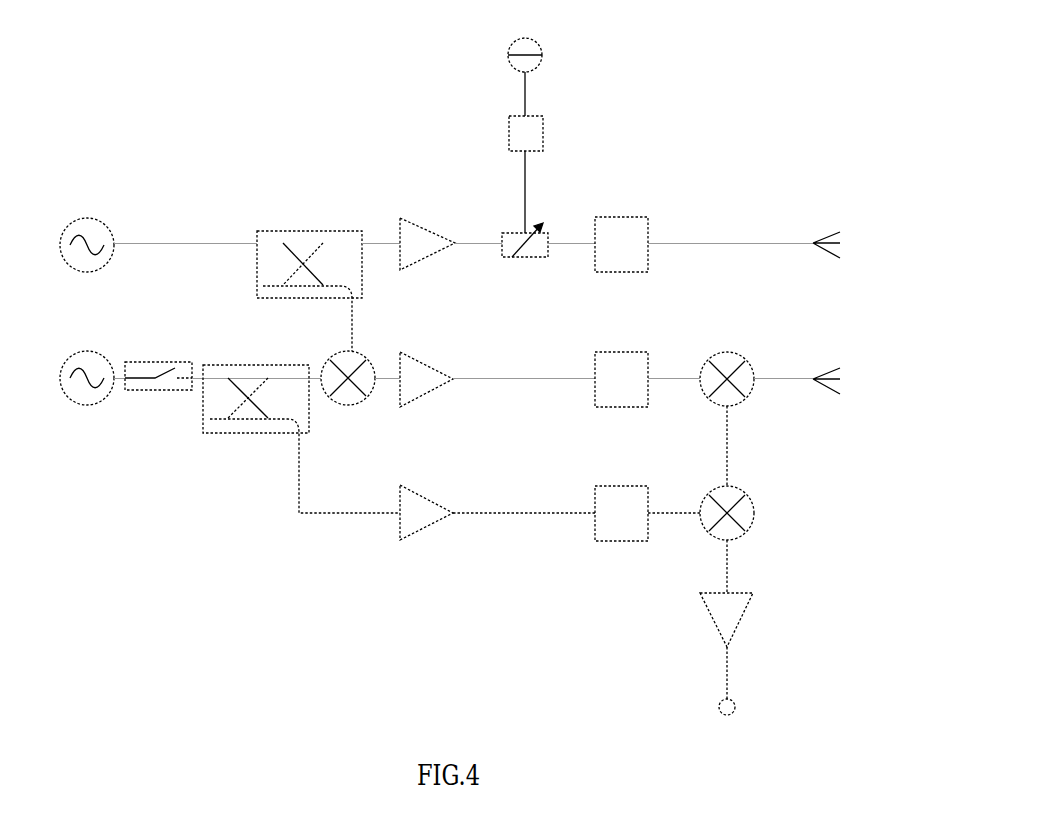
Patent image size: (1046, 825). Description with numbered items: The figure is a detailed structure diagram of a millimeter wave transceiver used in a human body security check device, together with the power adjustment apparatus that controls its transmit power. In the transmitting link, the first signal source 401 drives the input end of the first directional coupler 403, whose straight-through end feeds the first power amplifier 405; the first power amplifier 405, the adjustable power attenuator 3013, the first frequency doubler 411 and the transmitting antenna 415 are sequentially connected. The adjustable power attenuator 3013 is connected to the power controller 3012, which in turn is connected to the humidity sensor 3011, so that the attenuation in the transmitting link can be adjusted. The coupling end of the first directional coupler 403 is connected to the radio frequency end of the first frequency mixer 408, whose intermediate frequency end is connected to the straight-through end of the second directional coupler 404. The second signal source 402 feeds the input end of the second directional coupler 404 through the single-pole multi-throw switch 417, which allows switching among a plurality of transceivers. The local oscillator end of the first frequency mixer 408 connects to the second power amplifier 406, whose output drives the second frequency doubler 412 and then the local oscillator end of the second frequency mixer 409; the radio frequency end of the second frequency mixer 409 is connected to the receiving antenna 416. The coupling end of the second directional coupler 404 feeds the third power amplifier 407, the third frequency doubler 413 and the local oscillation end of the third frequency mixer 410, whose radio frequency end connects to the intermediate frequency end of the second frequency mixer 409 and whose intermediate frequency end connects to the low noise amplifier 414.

The first signal source 401 is at (87, 217).
The second signal source 402 is at (83, 405).
The first directional coupler 403 is at (310, 230).
The second directional coupler 404 is at (257, 433).
The first power amplifier 405 is at (428, 230).
The second power amplifier 406 is at (423, 395).
The third power amplifier 407 is at (423, 528).
The first frequency mixer 408 is at (347, 408).
The second frequency mixer 409 is at (727, 352).
The third frequency mixer 410 is at (753, 508).
The first frequency doubler 411 is at (622, 217).
The second frequency doubler 412 is at (620, 352).
The third frequency doubler 413 is at (620, 486).
The low noise amplifier 414 is at (752, 597).
The transmitting antenna 415 is at (833, 232).
The receiving antenna 416 is at (833, 368).
The single-pole multi-throw switch 417 is at (158, 392).
The humidity sensor 3011 is at (542, 55).
The power controller 3012 is at (545, 133).
The adjustable power attenuator 3013 is at (525, 257).